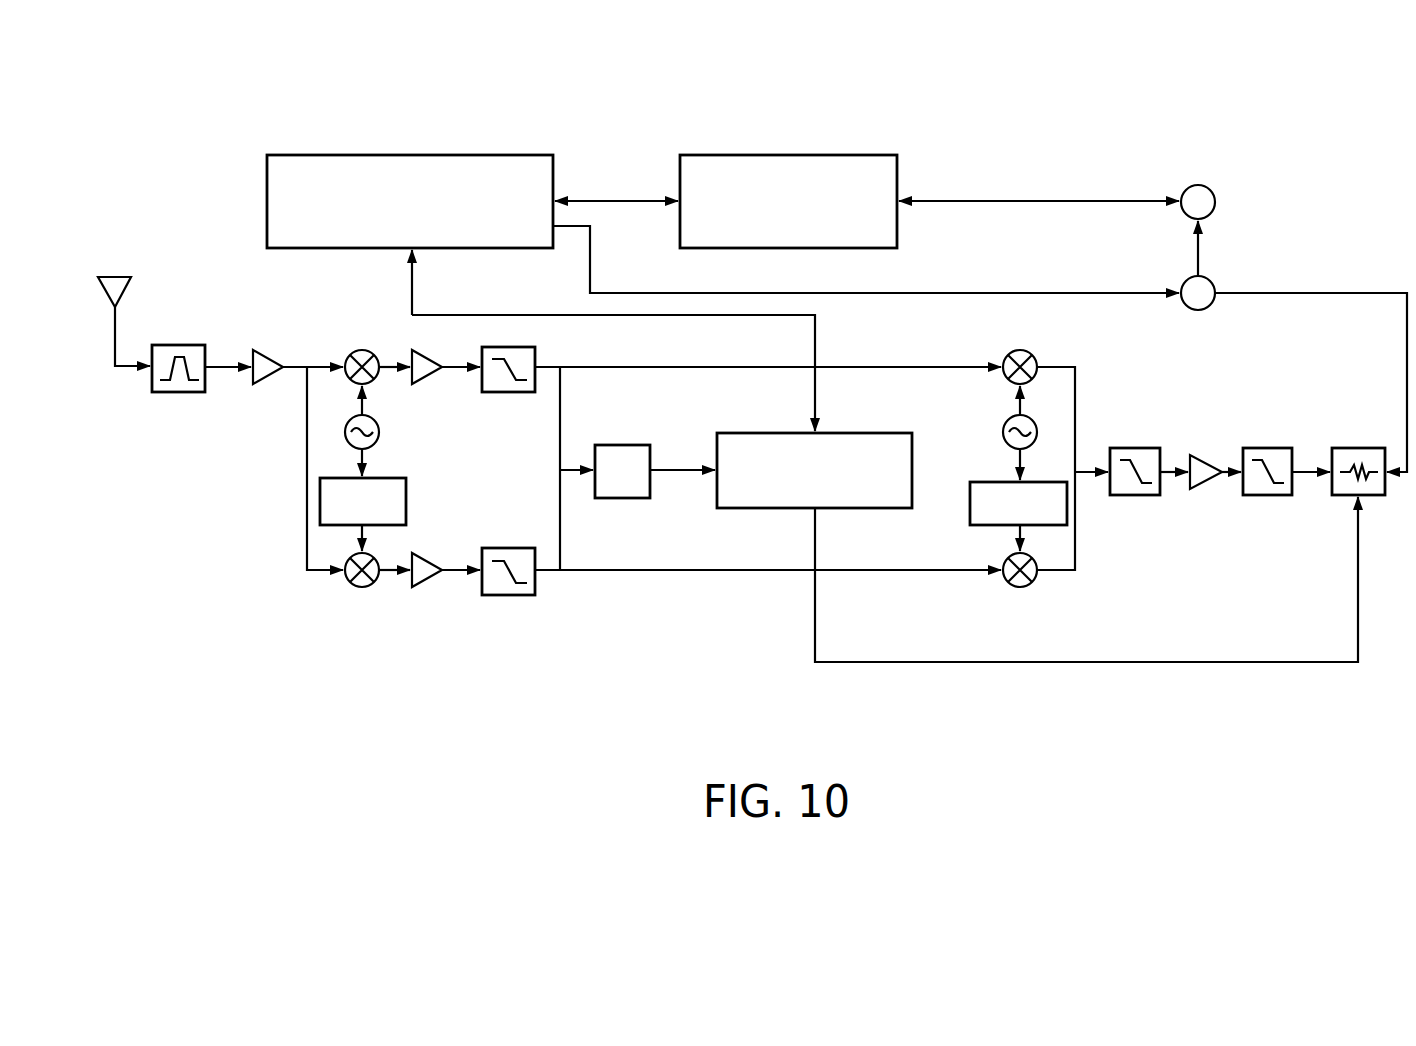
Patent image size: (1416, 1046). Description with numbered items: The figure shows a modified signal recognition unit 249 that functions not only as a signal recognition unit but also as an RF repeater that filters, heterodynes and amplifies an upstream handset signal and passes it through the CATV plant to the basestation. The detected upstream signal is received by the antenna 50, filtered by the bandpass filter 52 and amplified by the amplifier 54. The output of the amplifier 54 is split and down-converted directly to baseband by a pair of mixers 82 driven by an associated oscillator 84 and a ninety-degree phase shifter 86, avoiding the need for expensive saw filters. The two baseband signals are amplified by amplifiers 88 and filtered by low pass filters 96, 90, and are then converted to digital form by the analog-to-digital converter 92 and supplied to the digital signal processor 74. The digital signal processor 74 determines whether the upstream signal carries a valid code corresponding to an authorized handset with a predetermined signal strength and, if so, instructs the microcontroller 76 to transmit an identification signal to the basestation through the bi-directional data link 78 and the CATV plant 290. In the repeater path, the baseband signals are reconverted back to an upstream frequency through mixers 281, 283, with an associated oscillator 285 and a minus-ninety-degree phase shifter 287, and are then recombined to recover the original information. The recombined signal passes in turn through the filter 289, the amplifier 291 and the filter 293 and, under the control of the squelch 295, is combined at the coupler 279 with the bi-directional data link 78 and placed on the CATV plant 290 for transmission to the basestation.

The antenna 50 is at (127, 292).
The bandpass filter 52 is at (172, 393).
The amplifier 54 is at (270, 354).
The mixer 82 is at (362, 350).
The oscillator 84 is at (378, 436).
The 90° phase shifter 86 is at (407, 497).
The amplifier 88 is at (442, 345).
The low pass filter 90 is at (517, 597).
The low pass filter 96 is at (518, 393).
The analog-to-digital converter 92 is at (635, 503).
The digital signal processor 74 is at (760, 512).
The microcontroller 76 is at (337, 252).
The bi-directional data link 78 is at (750, 250).
The signal recognition unit 249 is at (203, 553).
The coupler 279 is at (1213, 278).
The mixer 281 is at (1012, 352).
The mixer 283 is at (1011, 587).
The oscillator 285 is at (1005, 420).
The −90° phase shifter 287 is at (975, 526).
The filter 289 is at (1145, 497).
The CATV plant 290 is at (1190, 187).
The amplifier 291 is at (1206, 491).
The filter 293 is at (1268, 497).
The squelch 295 is at (1350, 448).